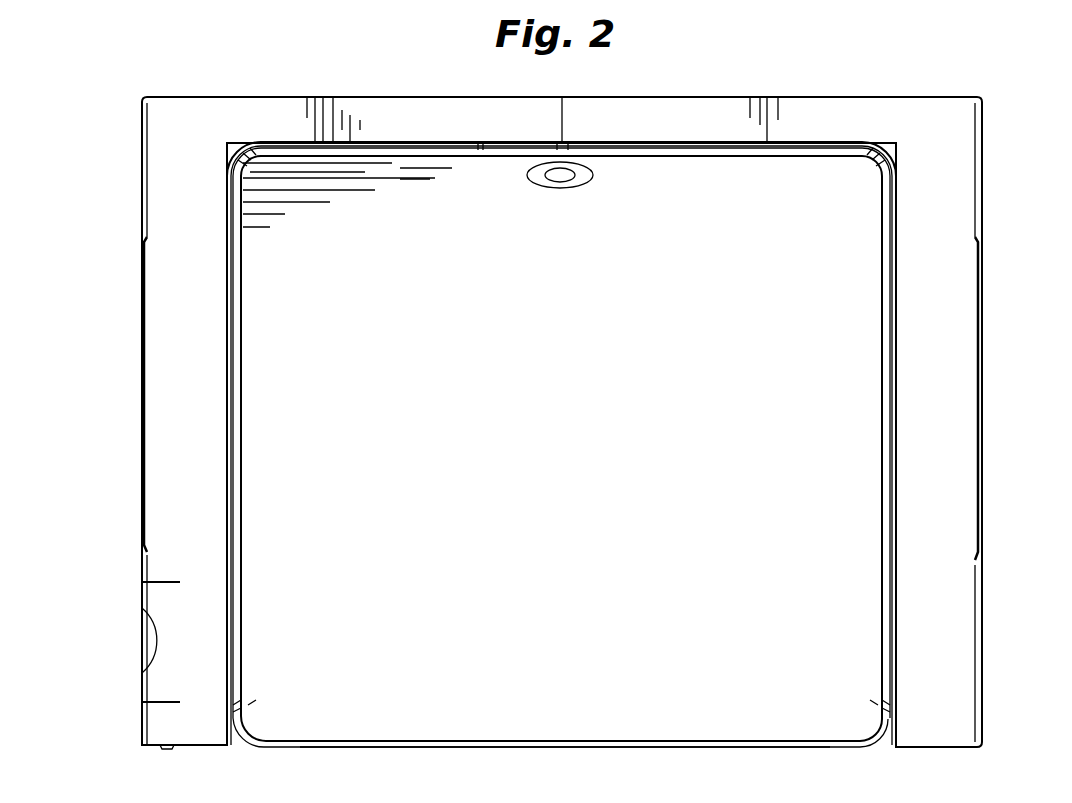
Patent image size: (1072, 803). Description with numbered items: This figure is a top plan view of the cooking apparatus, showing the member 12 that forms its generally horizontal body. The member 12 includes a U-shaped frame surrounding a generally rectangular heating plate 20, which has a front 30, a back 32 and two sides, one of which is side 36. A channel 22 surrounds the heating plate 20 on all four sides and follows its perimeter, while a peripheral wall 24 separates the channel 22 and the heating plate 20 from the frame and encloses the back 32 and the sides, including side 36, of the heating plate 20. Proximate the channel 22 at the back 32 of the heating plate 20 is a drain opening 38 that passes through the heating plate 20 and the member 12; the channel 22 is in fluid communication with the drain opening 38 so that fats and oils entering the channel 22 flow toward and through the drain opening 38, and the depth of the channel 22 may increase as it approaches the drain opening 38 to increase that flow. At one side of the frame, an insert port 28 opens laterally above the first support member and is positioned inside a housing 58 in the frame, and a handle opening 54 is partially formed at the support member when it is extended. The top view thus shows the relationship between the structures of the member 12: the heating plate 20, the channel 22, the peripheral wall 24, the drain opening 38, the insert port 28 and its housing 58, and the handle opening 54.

The member 12 is at (90, 260).
The heating plate 20 is at (775, 173).
The channel 22 is at (867, 145).
The peripheral wall 24 is at (277, 142).
The insert port 28 is at (145, 641).
The front 30 is at (587, 764).
The back 32 is at (727, 97).
The side 36 is at (983, 197).
The drain opening 38 is at (575, 168).
The handle opening 54 is at (140, 372).
The housing 58 is at (147, 598).